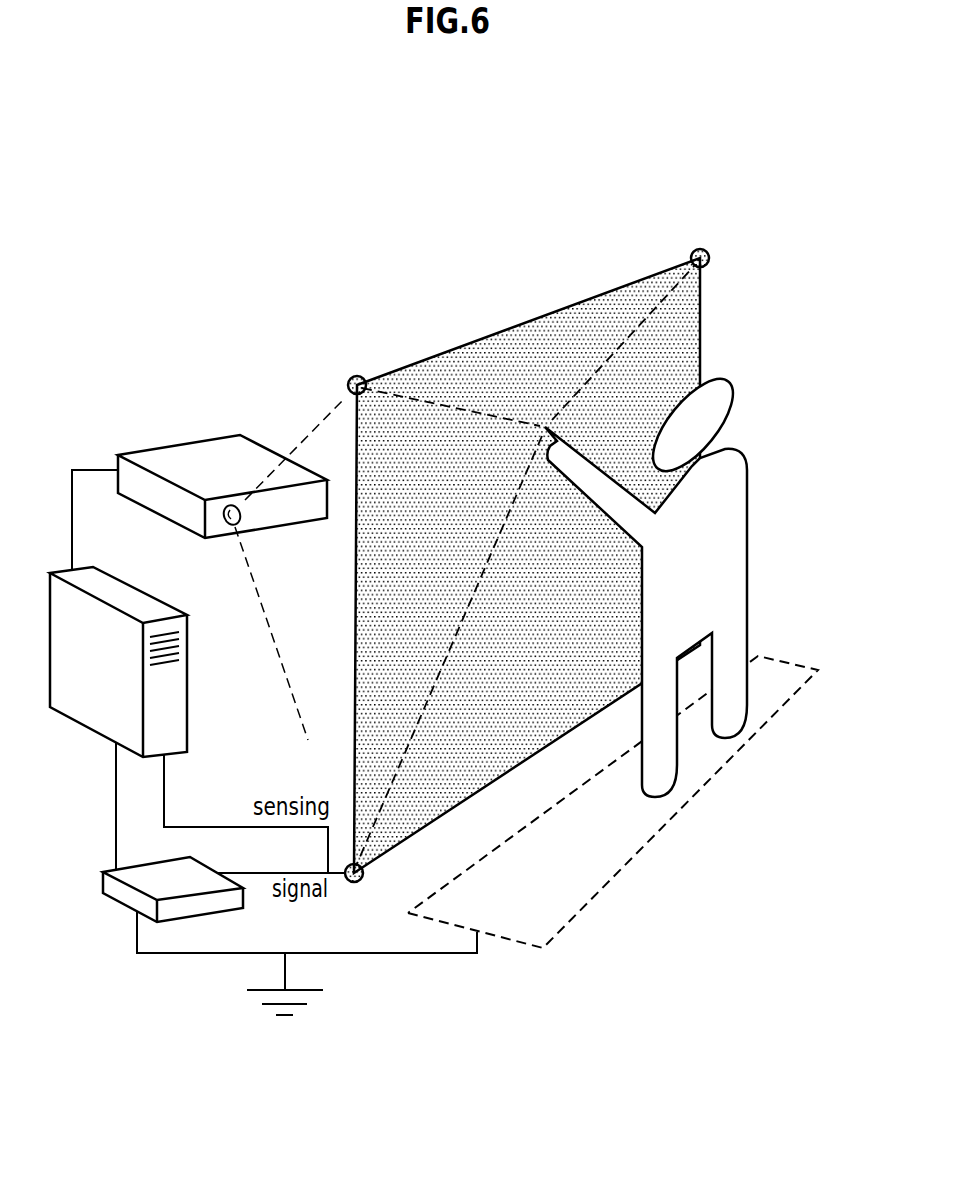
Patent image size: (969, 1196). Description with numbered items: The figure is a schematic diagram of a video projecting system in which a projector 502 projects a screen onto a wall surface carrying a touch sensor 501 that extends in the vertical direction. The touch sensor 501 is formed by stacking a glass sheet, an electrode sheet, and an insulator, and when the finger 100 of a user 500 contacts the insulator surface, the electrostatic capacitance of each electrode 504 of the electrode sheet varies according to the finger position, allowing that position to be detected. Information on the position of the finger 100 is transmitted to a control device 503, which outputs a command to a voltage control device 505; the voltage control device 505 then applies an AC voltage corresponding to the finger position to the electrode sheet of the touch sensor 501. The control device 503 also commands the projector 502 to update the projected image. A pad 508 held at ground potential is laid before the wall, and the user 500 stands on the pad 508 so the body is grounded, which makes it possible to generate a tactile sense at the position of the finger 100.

The finger 100 is at (545, 425).
The user 500 is at (747, 502).
The touch sensor 501 is at (700, 322).
The projector 502 is at (185, 452).
The control device 503 is at (132, 597).
The electrode 504 is at (698, 248).
The voltage control device 505 is at (122, 895).
The pad 508 is at (737, 750).